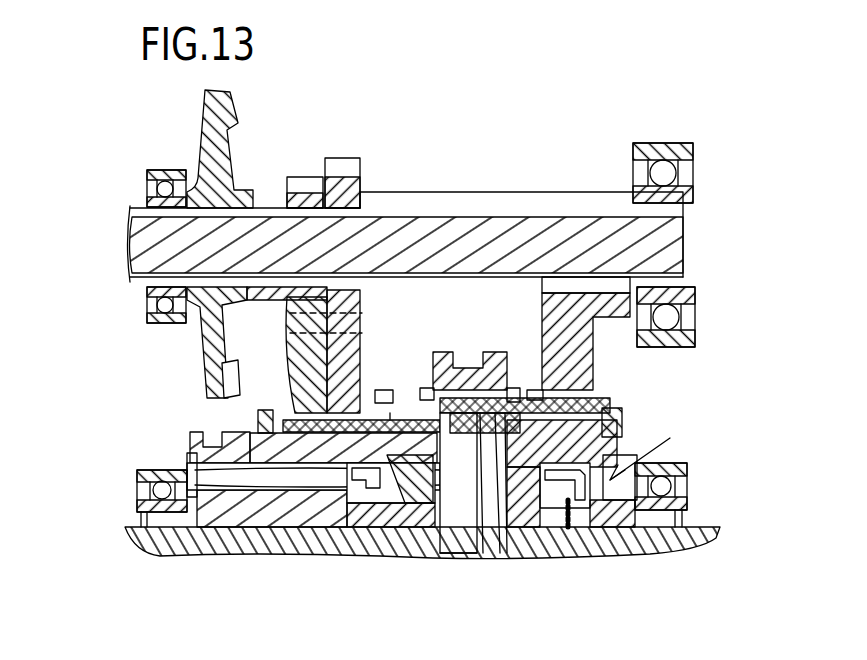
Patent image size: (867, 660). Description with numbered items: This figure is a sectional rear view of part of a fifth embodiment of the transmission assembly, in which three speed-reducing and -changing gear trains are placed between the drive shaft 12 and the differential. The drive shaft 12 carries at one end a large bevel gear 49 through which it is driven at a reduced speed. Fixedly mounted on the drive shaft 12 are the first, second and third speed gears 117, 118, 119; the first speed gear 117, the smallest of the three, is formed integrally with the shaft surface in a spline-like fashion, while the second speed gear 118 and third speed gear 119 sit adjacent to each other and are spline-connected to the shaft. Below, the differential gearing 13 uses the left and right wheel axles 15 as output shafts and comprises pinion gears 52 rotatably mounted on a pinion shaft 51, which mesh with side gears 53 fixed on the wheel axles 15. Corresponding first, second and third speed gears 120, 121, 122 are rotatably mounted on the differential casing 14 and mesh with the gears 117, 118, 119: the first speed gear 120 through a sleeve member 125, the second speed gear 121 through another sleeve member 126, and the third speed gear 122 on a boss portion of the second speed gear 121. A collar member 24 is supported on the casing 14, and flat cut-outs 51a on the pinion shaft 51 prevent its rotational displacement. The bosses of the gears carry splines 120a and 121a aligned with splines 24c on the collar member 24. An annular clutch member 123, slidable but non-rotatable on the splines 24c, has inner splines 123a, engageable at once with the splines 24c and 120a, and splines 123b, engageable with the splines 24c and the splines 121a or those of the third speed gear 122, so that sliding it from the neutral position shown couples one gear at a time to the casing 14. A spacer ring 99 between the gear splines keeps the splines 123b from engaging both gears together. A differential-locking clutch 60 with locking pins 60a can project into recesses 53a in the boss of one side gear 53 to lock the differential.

The drive shaft 12 is at (450, 227).
The differential gearing 13 is at (638, 462).
The differential casing 14 is at (653, 449).
The wheel axles 15 is at (157, 538).
The collar member 24 is at (505, 537).
The splines 24c is at (507, 390).
The large bevel gear 49 is at (226, 105).
The pinion shaft 51 is at (467, 548).
The flat cut-outs 51a is at (480, 550).
The pinion gears 52 is at (617, 431).
The side gears 53 is at (143, 528).
The recesses 53a is at (190, 467).
The differential-locking clutch 60 is at (192, 460).
The locking pins 60a is at (260, 470).
The spacer ring 99 is at (398, 430).
The first speed gear 117 is at (555, 205).
The second speed gear 118 is at (310, 177).
The third speed gear 119 is at (350, 177).
The first speed gear 120 is at (685, 273).
The splines 120a is at (527, 398).
The second speed gear 121 is at (293, 308).
The splines 121a is at (383, 400).
The third speed gear 122 is at (353, 327).
The annular clutch member 123 is at (460, 390).
The splines 123a is at (540, 390).
The splines 123b is at (427, 390).
The sleeve member 125 is at (603, 547).
The sleeve member 126 is at (293, 377).